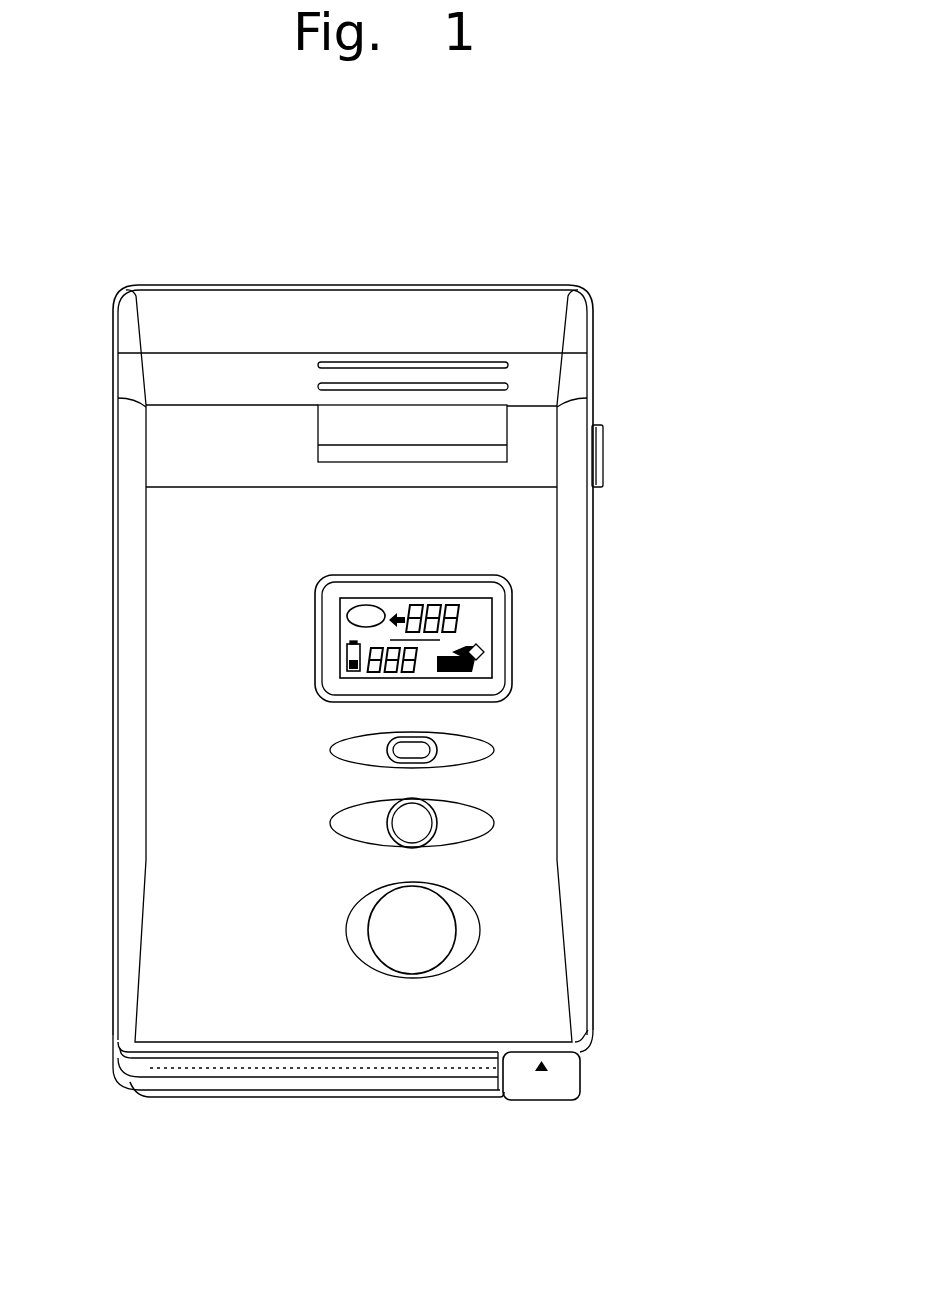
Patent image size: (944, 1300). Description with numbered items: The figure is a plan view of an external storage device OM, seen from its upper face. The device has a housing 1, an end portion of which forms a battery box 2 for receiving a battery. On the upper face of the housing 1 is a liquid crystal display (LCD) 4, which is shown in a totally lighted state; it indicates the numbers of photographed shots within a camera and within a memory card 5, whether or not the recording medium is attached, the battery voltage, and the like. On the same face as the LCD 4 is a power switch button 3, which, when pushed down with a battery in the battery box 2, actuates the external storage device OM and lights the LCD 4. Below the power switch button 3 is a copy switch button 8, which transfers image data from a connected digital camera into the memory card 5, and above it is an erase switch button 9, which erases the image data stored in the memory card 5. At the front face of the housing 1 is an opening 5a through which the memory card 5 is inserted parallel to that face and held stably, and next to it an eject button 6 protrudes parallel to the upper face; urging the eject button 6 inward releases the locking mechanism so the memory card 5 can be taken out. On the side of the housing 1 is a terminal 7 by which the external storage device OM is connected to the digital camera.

The external storage device OM is at (497, 262).
The housing 1 is at (196, 748).
The battery box 2 is at (212, 320).
The power switch button 3 is at (413, 820).
The liquid crystal display (LCD) 4 is at (512, 621).
The memory card (recording medium) 5 is at (467, 1069).
The opening 5a is at (186, 1096).
The eject button 6 is at (572, 1062).
The terminal 7 is at (605, 449).
The copy switch button 8 is at (437, 927).
The erase switch button 9 is at (425, 750).